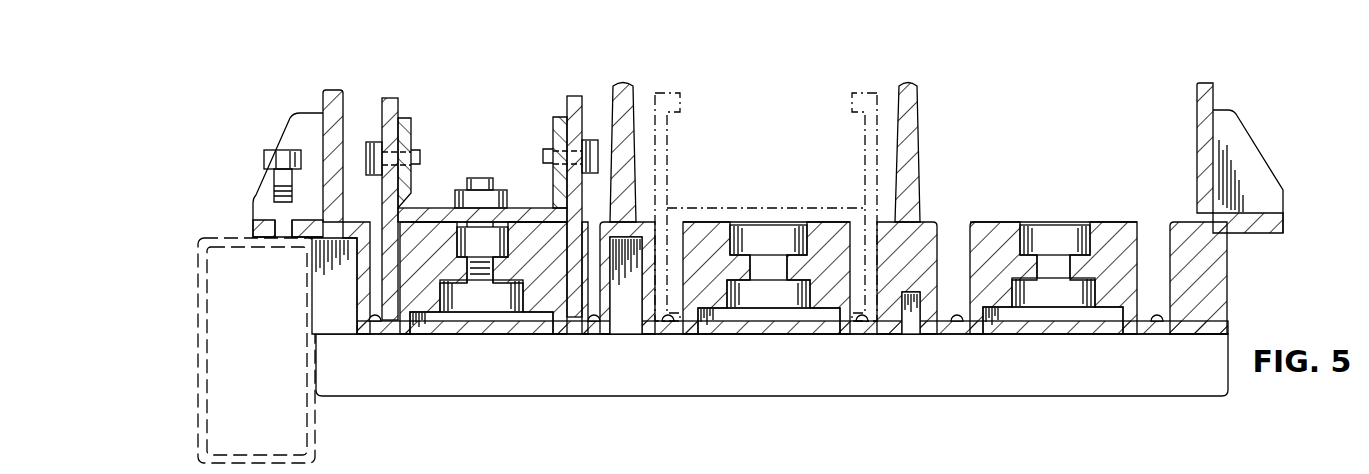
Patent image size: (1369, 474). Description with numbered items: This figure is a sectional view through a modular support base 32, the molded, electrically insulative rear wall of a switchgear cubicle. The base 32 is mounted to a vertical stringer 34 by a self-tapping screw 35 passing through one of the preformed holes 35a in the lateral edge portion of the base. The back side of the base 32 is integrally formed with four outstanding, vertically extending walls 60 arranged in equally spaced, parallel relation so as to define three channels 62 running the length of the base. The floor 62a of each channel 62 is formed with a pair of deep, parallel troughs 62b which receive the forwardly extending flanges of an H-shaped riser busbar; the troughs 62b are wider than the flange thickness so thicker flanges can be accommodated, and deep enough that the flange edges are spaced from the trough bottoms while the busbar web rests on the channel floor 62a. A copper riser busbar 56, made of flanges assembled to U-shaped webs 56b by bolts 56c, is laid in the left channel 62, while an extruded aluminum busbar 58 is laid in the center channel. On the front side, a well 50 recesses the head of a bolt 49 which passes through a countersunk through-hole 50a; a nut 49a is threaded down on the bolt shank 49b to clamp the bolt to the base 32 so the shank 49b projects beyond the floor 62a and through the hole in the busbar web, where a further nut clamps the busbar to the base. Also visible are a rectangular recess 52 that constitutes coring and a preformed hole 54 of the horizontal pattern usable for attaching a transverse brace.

The modular support base 32 is at (1230, 300).
The vertical stringer 34 is at (200, 342).
The self-tapping screw 35 is at (275, 178).
The hole 35a is at (280, 218).
The bolt 49 is at (487, 232).
The nut 49a is at (505, 240).
The bolt shank 49b is at (475, 223).
The well 50 is at (432, 332).
The through-hole 50a is at (482, 300).
The rectangular recess 52 is at (628, 300).
The preformed hole 54 is at (912, 310).
The copper riser busbar 56 is at (398, 110).
The U-shaped web 56b is at (432, 212).
The bolt 56c is at (421, 157).
The aluminum busbar 58 is at (672, 130).
The wall 60 is at (343, 95).
The channel 62 is at (492, 140).
The channel floor 62a is at (548, 220).
The trough 62b is at (370, 328).